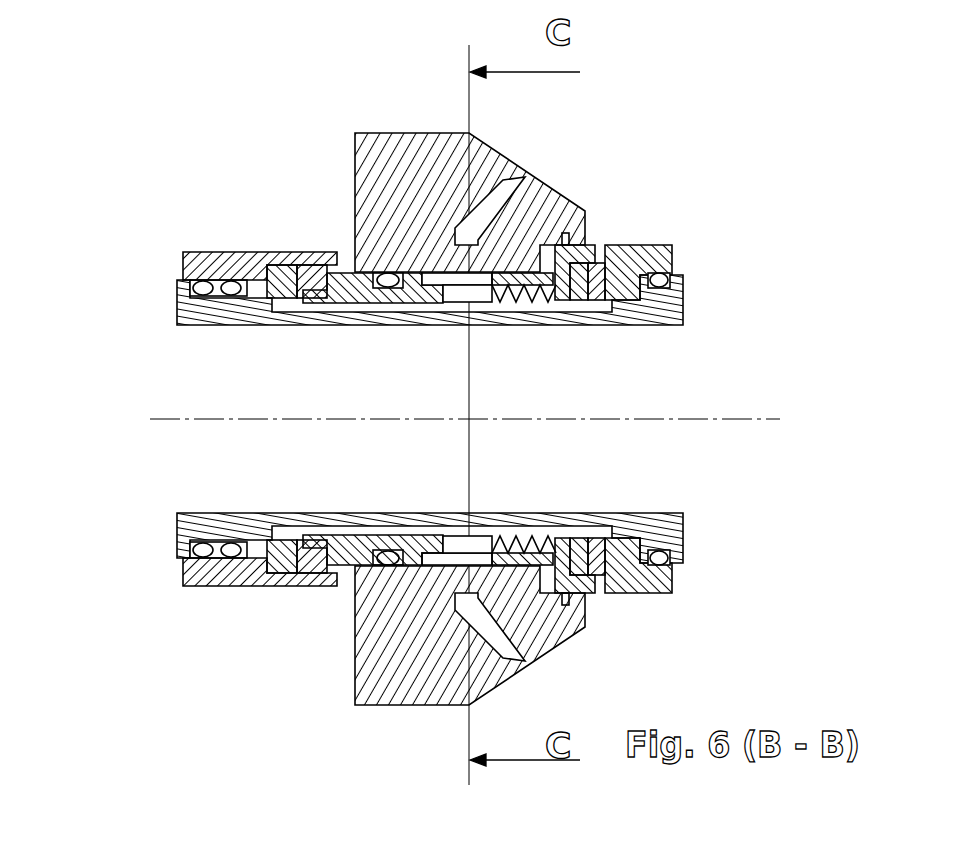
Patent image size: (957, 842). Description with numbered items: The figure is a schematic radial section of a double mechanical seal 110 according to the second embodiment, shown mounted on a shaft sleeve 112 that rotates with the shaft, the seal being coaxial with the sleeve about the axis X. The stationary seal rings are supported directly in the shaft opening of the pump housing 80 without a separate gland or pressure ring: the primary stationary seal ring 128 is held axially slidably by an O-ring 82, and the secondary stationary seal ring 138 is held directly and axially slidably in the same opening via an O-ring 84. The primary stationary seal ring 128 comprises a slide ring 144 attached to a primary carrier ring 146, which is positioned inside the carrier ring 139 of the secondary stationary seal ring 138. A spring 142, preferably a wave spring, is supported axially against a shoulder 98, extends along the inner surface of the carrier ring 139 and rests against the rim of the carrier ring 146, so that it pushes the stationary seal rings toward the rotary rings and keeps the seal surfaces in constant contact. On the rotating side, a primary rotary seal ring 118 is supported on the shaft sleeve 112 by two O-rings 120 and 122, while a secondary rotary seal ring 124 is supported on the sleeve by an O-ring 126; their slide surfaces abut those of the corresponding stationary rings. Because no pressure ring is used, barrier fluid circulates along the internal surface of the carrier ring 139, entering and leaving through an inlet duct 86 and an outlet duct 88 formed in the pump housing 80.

The pump housing 80 is at (400, 187).
The O-ring 82 is at (385, 273).
The O-ring 84 is at (566, 238).
The inlet duct 86 is at (500, 648).
The outlet duct 88 is at (505, 165).
The shoulder 98 is at (540, 548).
The double mechanical seal 110 is at (299, 237).
The shaft sleeve 112 is at (275, 322).
The primary rotary seal ring 118 is at (240, 255).
The O-ring 120 is at (212, 285).
The O-ring 122 is at (192, 290).
The secondary rotary seal ring 124 is at (672, 246).
The O-ring 126 is at (668, 280).
The primary stationary seal ring 128 is at (300, 262).
The secondary stationary seal ring 138 is at (596, 249).
The carrier ring 139 is at (505, 302).
The spring 142 is at (520, 538).
The slide ring 144 is at (300, 586).
The primary carrier ring 146 is at (345, 568).
The axis X is at (730, 419).